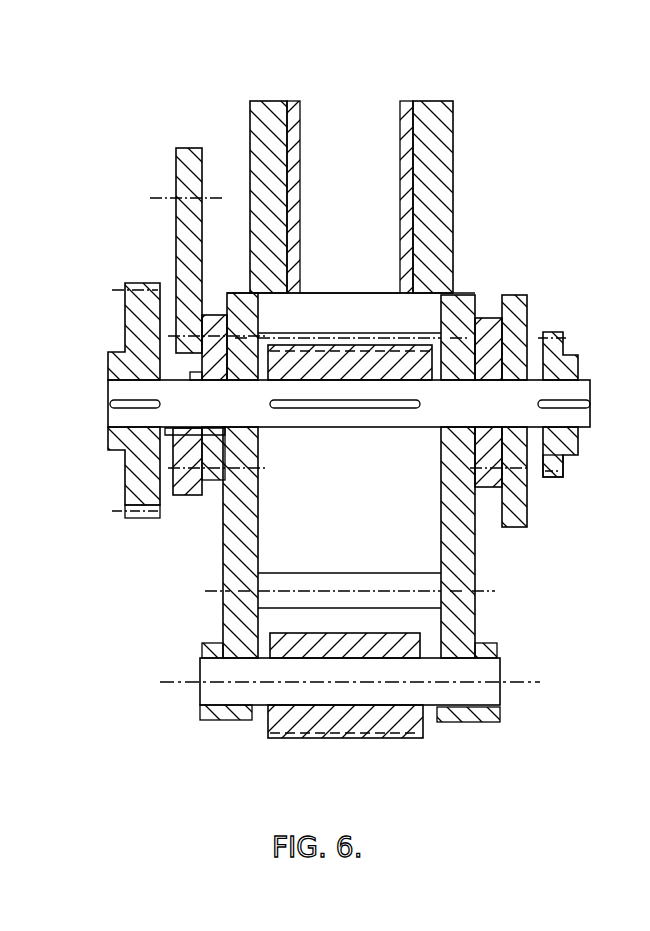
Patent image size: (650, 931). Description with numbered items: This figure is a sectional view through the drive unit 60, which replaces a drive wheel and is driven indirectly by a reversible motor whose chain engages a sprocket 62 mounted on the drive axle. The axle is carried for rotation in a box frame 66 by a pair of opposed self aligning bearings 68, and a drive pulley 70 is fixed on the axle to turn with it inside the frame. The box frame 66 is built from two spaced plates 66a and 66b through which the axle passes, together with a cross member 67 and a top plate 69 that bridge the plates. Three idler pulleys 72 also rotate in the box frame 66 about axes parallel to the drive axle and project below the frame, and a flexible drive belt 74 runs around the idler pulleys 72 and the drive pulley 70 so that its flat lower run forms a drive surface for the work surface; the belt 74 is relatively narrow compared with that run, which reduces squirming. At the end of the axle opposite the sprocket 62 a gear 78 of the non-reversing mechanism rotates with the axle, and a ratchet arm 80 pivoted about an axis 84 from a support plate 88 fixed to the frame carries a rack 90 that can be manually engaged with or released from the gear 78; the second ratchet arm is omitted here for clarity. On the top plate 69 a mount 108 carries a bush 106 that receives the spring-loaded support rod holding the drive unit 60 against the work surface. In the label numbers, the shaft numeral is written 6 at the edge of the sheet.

The shaft 6 is at (592, 405).
The drive unit 60 is at (534, 713).
The sprocket 62 is at (562, 462).
The box frame 66 is at (240, 563).
The spaced plate 66a is at (218, 617).
The spaced plate 66b is at (478, 550).
The cross member 67 is at (350, 573).
The self aligning bearing 68 is at (210, 455).
The top plate 69 is at (372, 293).
The drive pulley 70 is at (350, 430).
The idler pulley 72 is at (388, 738).
The flexible drive belt 74 is at (405, 690).
The gear 78 is at (140, 515).
The ratchet arm 80 is at (571, 385).
The axis 84 is at (190, 199).
The support plate 88 is at (190, 172).
The rack 90 is at (589, 404).
The bush 106 is at (300, 150).
The mount 108 is at (445, 192).